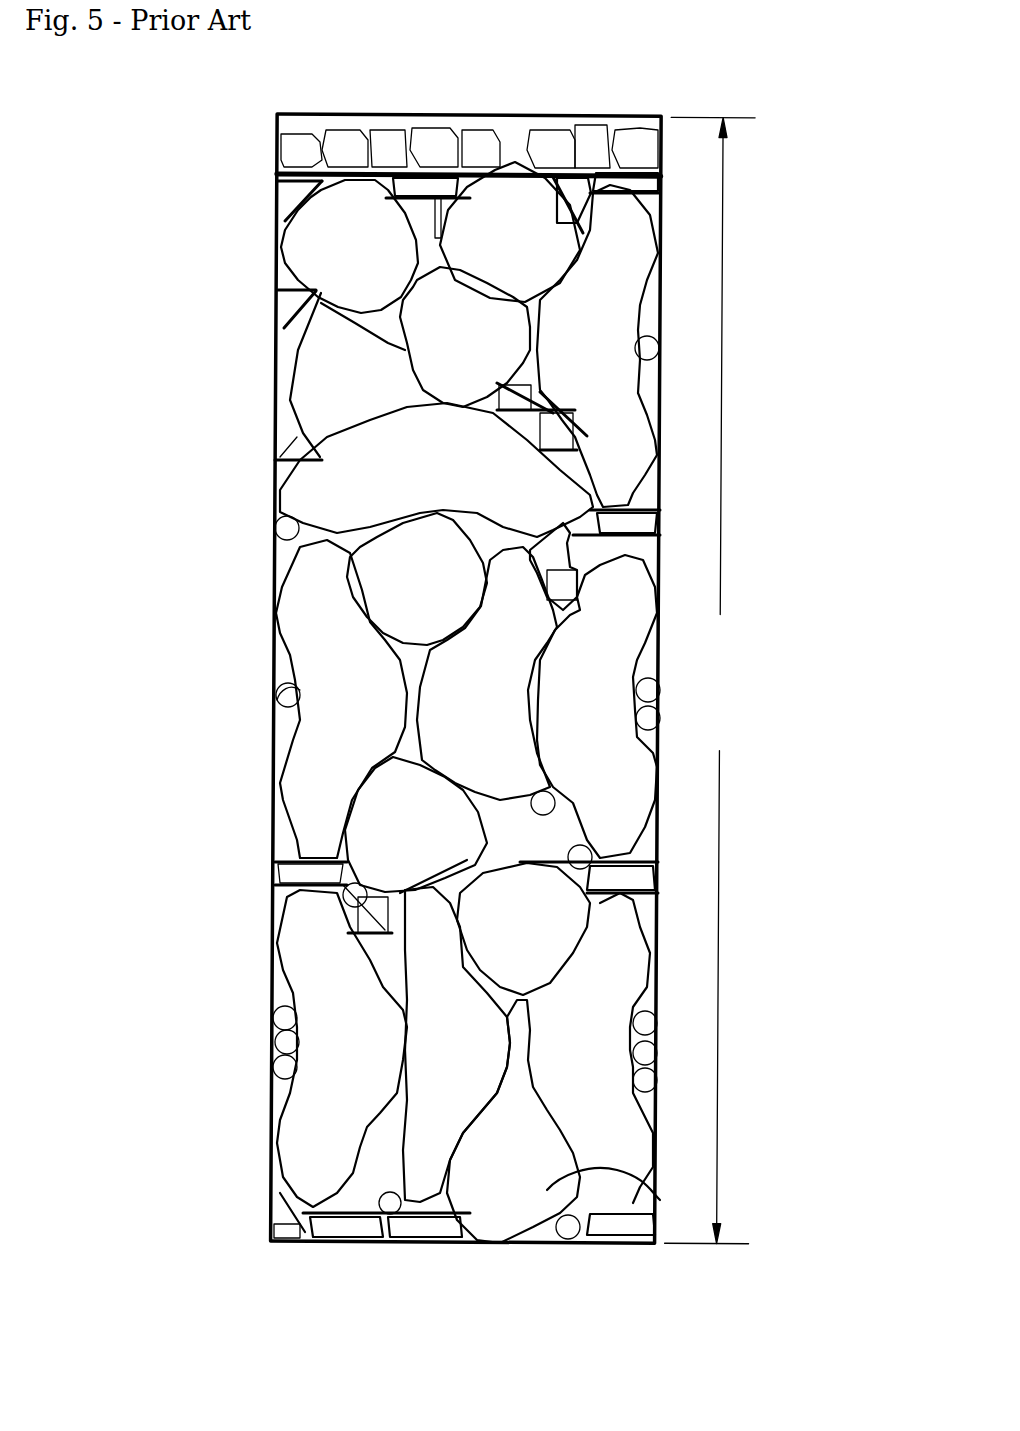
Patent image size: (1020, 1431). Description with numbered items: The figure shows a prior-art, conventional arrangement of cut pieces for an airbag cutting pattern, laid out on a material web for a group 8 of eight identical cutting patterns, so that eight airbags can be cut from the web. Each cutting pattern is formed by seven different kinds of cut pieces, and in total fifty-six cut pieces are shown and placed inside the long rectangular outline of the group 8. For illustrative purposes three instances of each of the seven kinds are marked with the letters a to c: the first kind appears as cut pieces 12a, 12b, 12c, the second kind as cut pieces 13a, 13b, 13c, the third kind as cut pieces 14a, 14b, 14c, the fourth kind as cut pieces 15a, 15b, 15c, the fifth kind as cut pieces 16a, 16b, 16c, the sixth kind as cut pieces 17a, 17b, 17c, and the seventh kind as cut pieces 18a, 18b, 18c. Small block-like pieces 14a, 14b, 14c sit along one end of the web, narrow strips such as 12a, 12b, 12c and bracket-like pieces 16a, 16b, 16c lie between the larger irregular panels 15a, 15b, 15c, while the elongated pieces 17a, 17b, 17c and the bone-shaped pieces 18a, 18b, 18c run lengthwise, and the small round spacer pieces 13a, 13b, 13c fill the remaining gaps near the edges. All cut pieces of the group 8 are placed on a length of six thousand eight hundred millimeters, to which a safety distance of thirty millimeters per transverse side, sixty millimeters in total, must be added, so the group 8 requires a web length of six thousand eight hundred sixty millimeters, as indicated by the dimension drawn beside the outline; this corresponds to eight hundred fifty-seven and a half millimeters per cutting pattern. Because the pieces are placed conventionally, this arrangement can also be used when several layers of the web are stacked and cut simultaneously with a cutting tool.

The group of cutting patterns 8 is at (810, 130).
The cut piece 12a is at (343, 1230).
The cut piece 12b is at (372, 935).
The cut piece 12c is at (623, 1233).
The cut piece 13a is at (287, 1243).
The cut piece 13b is at (246, 1042).
The cut piece 13c is at (239, 519).
The cut piece 14a is at (290, 168).
The cut piece 14b is at (333, 130).
The cut piece 14c is at (392, 130).
The cut piece 15a is at (297, 388).
The cut piece 15b is at (303, 242).
The cut piece 15c is at (660, 1200).
The cut piece 16a is at (583, 200).
The cut piece 16b is at (593, 600).
The cut piece 16c is at (553, 847).
The cut piece 17a is at (280, 542).
The cut piece 17b is at (277, 712).
The cut piece 17c is at (275, 1093).
The cut piece 18a is at (607, 420).
The cut piece 18b is at (520, 787).
The cut piece 18c is at (487, 1063).